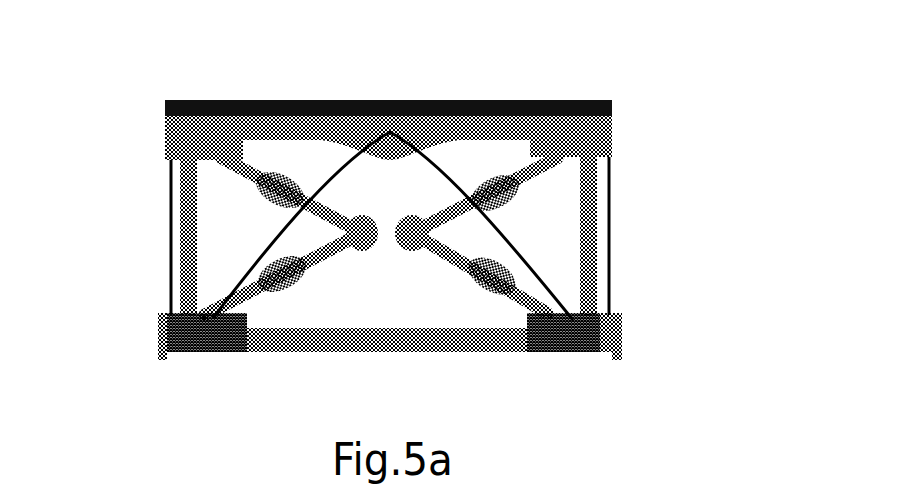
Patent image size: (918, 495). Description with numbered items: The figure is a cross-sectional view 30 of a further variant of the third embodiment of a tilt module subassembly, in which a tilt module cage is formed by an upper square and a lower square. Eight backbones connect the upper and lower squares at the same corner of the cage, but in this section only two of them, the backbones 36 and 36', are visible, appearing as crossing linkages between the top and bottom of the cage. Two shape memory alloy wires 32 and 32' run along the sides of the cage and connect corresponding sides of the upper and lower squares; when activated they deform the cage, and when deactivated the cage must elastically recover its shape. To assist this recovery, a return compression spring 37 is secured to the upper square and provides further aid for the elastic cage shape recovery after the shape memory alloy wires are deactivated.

The cross-sectional view 30 is at (667, 142).
The shape memory alloy wire 32 is at (112, 237).
The shape memory alloy wire 32' is at (649, 236).
The backbone 36 is at (569, 235).
The backbone 36' is at (219, 190).
The return compression spring 37 is at (293, 287).